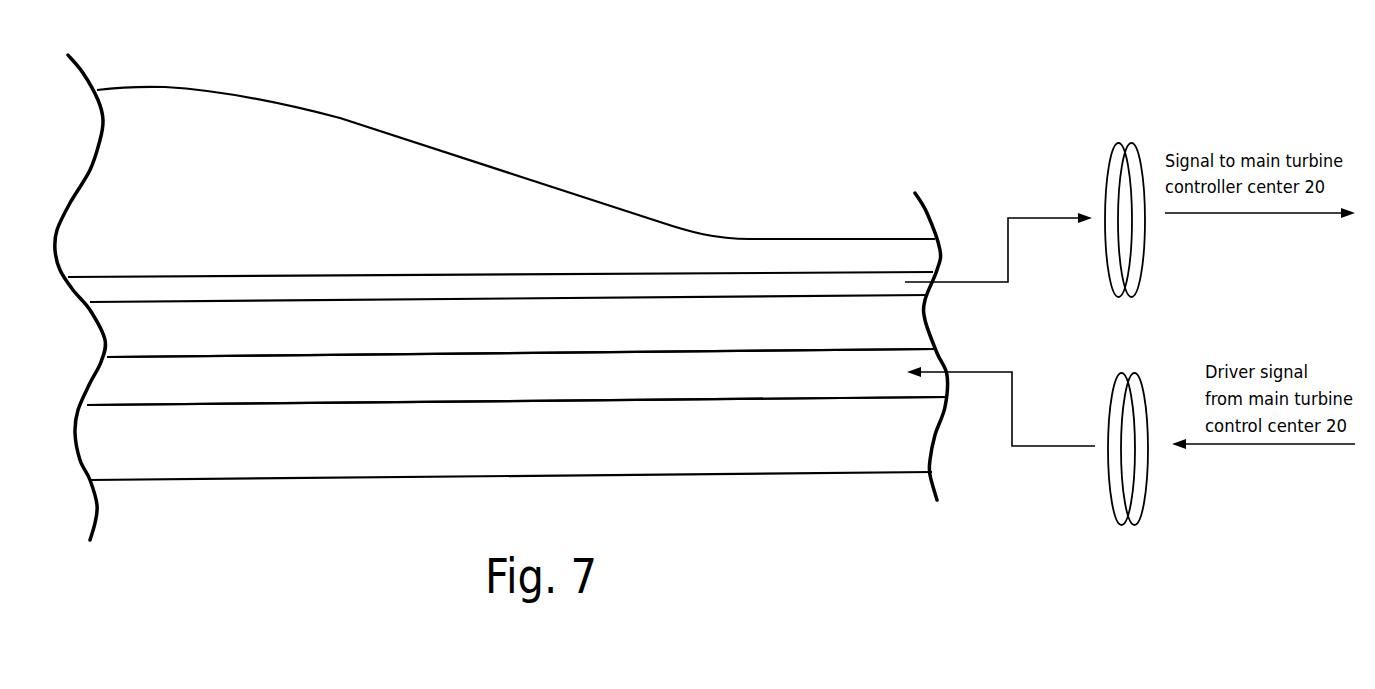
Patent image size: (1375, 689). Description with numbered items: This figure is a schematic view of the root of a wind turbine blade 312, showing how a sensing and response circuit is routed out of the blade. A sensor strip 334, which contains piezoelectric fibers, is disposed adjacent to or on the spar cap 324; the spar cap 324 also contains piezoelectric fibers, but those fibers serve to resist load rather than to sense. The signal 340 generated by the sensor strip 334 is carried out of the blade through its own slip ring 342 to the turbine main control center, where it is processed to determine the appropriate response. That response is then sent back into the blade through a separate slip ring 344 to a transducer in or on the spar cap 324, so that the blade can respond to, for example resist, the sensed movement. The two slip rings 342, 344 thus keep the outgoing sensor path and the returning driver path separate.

The rotor blade 312 is at (185, 120).
The sensor strip 334 is at (175, 290).
The spar cap 324 is at (255, 385).
The signal 340 is at (1035, 215).
The slip ring 342 is at (1132, 127).
The slip ring 344 is at (1083, 497).